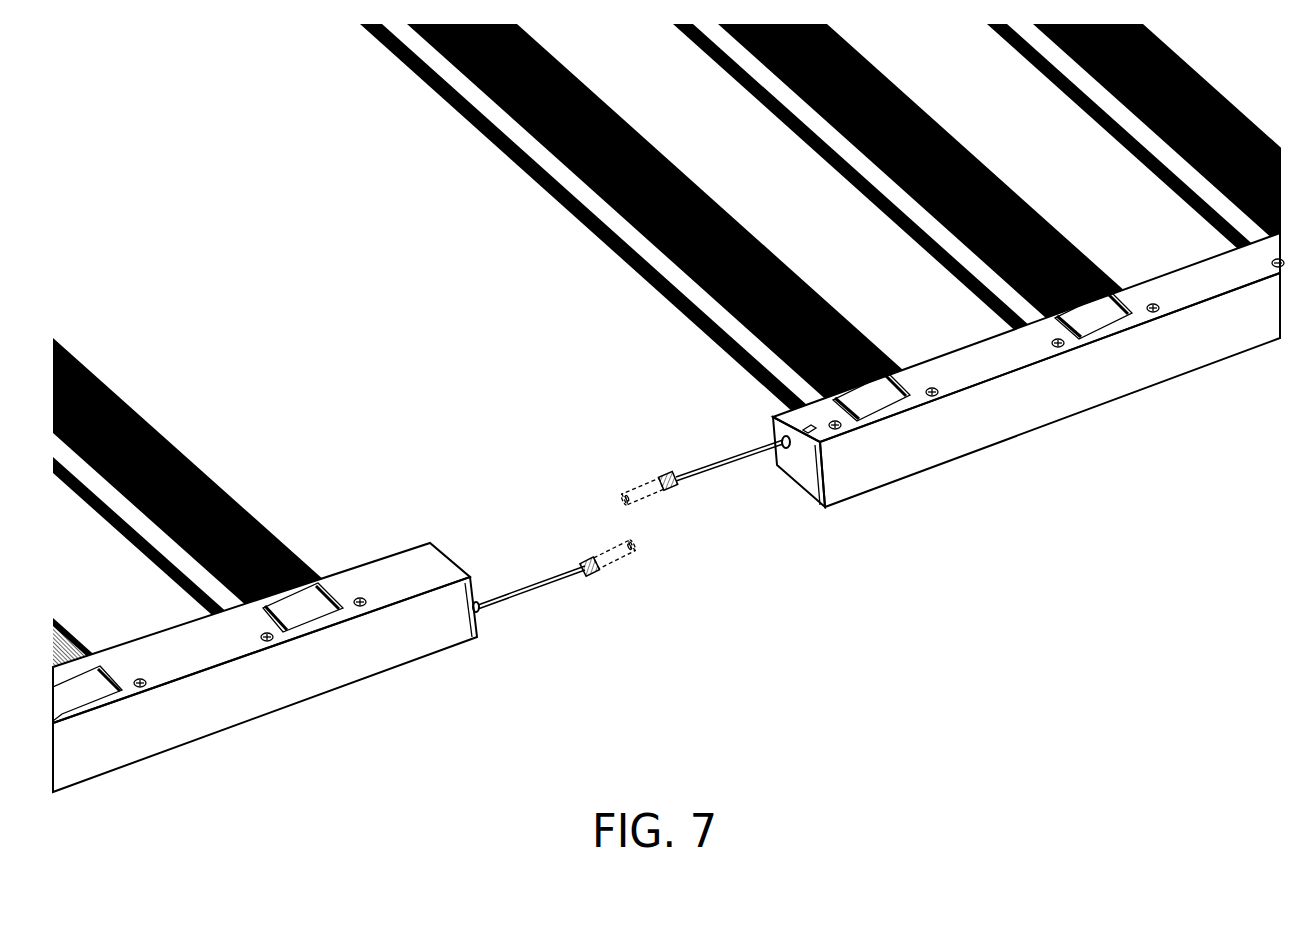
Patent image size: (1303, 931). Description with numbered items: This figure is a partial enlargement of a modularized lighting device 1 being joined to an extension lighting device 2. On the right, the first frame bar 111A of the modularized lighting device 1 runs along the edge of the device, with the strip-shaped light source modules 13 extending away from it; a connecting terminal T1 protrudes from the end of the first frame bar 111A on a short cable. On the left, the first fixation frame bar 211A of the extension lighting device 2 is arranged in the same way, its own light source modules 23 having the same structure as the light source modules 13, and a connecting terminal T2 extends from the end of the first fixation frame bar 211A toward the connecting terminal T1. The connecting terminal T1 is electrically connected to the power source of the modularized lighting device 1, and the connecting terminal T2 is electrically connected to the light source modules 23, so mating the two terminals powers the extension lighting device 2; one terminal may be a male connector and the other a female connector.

The modularized lighting device 1 is at (1112, 535).
The extension lighting device 2 is at (473, 723).
The light source module 13 is at (733, 333).
The light source module 23 is at (252, 512).
The first frame bar 111A is at (860, 473).
The first fixation frame bar 211A is at (422, 563).
The connecting terminal T1 is at (657, 497).
The connecting terminal T2 is at (608, 563).